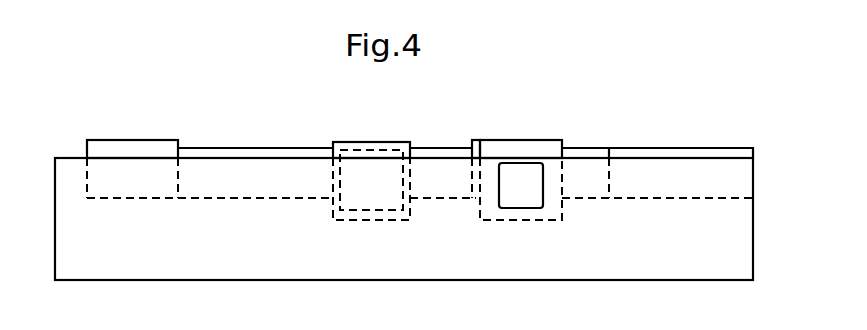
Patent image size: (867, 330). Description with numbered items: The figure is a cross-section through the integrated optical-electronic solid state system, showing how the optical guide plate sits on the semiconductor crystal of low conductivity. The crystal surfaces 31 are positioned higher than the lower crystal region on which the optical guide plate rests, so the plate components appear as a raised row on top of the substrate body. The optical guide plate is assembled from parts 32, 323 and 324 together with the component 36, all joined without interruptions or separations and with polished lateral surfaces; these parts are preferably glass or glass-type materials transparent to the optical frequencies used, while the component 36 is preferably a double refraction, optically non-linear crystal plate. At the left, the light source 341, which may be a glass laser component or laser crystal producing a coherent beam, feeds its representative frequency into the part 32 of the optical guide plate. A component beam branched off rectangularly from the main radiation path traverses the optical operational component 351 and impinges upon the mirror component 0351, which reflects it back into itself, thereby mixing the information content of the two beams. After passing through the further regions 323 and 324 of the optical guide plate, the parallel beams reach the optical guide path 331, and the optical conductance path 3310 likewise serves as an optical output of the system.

The crystal surfaces 31 is at (380, 266).
The part of the optical guide plate 32 is at (230, 150).
The light source 341 is at (123, 148).
The mirror component 0351 is at (358, 142).
The optical operational component 351 is at (344, 214).
The part of the optical guide plate 324 is at (477, 139).
The component of the optical guide plate 36 is at (533, 148).
The optical conductance path 3310 is at (527, 193).
The part of the optical guide plate 323 is at (582, 152).
The optical guide path 331 is at (688, 152).